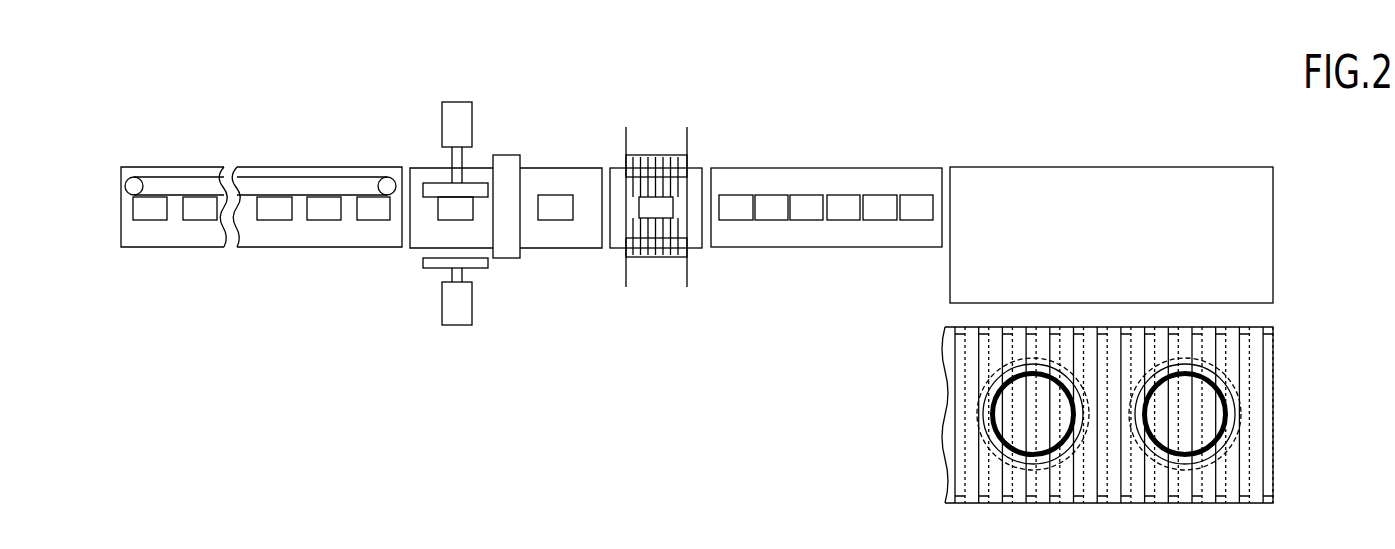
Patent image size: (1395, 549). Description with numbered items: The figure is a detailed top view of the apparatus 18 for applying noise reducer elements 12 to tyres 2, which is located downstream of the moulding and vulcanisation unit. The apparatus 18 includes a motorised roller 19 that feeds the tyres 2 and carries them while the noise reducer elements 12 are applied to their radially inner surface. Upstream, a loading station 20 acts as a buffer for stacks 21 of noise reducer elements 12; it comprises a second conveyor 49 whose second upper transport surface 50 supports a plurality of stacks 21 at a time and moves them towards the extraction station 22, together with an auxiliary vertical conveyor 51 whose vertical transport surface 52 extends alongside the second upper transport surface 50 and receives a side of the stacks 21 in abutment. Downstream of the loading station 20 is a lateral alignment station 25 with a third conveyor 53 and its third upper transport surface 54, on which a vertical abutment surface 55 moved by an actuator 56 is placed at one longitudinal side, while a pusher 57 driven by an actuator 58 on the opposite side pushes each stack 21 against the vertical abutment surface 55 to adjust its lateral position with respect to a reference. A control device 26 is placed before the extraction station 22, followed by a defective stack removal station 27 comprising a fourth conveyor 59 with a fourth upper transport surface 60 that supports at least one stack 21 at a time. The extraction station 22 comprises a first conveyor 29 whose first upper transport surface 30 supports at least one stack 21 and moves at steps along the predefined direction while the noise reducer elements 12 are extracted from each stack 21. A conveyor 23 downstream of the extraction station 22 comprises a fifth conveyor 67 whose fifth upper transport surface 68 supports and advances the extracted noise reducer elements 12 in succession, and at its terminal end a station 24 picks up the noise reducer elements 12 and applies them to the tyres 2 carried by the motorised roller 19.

The tyre 2 is at (983, 405).
The noise reducer element 12 is at (737, 214).
The apparatus for applying noise reducer elements 18 is at (334, 344).
The motorised roller 19 is at (1280, 488).
The loading station 20 is at (289, 133).
The stack 21 is at (151, 222).
The extraction station 22 is at (651, 132).
The conveyor 23 is at (913, 125).
The station 24 is at (1278, 210).
The lateral alignment station 25 is at (483, 94).
The control device 26 is at (506, 248).
The defective stack removal station 27 is at (556, 255).
The first conveyor 29 is at (618, 254).
The first upper transport surface 30 is at (690, 233).
The second conveyor 49 is at (141, 252).
The second upper transport surface 50 is at (243, 233).
The auxiliary vertical conveyor 51 is at (212, 170).
The vertical transport surface 52 is at (177, 197).
The third conveyor 53 is at (423, 163).
The third upper transport surface 54 is at (412, 233).
The vertical abutment surface 55 is at (472, 190).
The actuator 56 is at (458, 120).
The pusher 57 is at (473, 264).
The actuator 58 is at (452, 302).
The fourth conveyor 59 is at (573, 165).
The fourth upper transport surface 60 is at (580, 233).
The fifth conveyor 67 is at (736, 166).
The fifth upper transport surface 68 is at (815, 182).